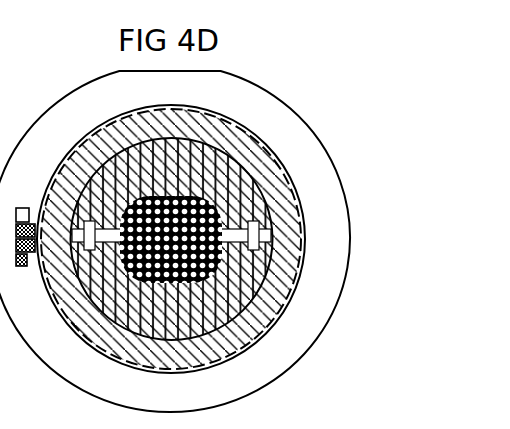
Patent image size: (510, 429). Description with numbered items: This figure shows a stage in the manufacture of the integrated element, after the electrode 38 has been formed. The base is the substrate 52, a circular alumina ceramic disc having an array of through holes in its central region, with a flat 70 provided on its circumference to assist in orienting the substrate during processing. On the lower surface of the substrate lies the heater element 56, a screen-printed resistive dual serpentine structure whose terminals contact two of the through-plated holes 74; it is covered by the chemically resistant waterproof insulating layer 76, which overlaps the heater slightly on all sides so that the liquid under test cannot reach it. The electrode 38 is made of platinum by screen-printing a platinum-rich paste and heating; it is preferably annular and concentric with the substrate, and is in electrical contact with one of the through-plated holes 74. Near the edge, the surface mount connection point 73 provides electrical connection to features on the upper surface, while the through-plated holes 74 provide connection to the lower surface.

The substrate 52 is at (290, 360).
The flat 70 is at (128, 72).
The heater element 56 is at (222, 125).
The insulating layer 76 is at (313, 206).
The electrode 38 is at (298, 280).
The surface mount connection point 73 is at (30, 193).
The through-plated holes 74 is at (21, 266).